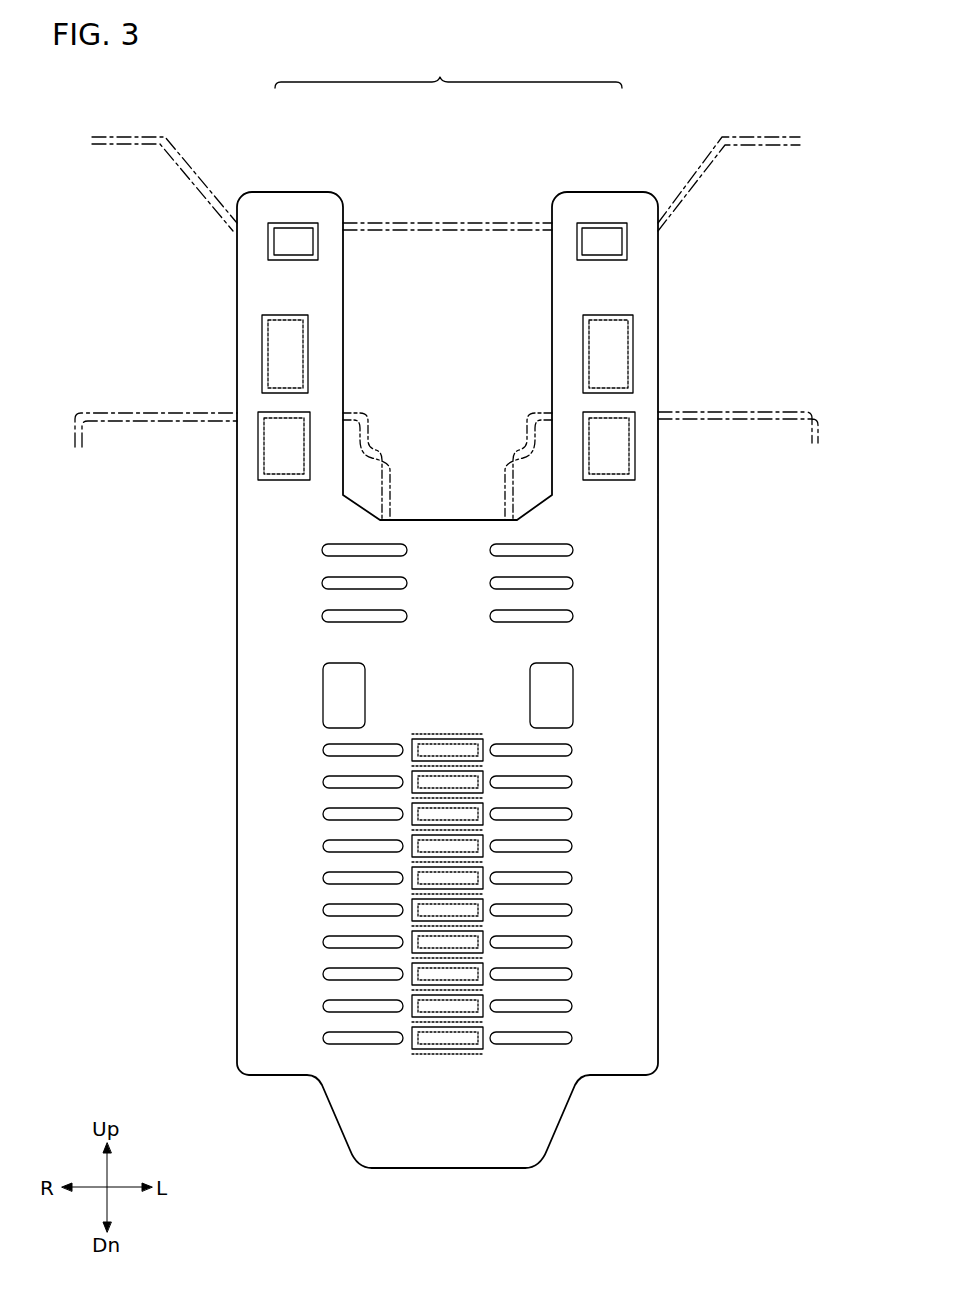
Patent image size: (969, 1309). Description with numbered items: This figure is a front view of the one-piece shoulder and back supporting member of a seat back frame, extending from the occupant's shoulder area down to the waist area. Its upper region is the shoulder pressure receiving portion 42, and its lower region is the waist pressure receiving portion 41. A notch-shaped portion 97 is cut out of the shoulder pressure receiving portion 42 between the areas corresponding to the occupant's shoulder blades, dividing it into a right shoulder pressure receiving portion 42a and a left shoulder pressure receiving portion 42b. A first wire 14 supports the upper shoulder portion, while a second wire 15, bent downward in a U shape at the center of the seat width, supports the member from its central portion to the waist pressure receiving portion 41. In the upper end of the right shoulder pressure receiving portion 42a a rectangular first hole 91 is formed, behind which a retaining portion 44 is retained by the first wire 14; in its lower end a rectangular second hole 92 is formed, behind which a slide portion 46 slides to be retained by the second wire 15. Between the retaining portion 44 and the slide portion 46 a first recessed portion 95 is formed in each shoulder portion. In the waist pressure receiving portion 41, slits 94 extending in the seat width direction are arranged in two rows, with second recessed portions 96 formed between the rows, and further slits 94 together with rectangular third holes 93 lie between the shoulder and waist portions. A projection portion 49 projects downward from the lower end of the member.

The first wire 14 is at (744, 137).
The second wire 15 is at (768, 412).
The waist pressure receiving portion 41 is at (218, 1018).
The shoulder pressure receiving portion 42 is at (448, 67).
The right shoulder pressure receiving portion 42a is at (293, 215).
The left shoulder pressure receiving portion 42b is at (606, 215).
The retaining portion 44 is at (283, 240).
The slide portion 46 is at (281, 444).
The projection portion 49 is at (450, 1168).
The first hole 91 is at (290, 261).
The second hole 92 is at (283, 481).
The third holes 93 is at (323, 701).
The slits 94 is at (322, 616).
The first recessed portion 95 is at (292, 358).
The second recessed portions 96 is at (445, 845).
The notch-shaped portion 97 is at (452, 516).